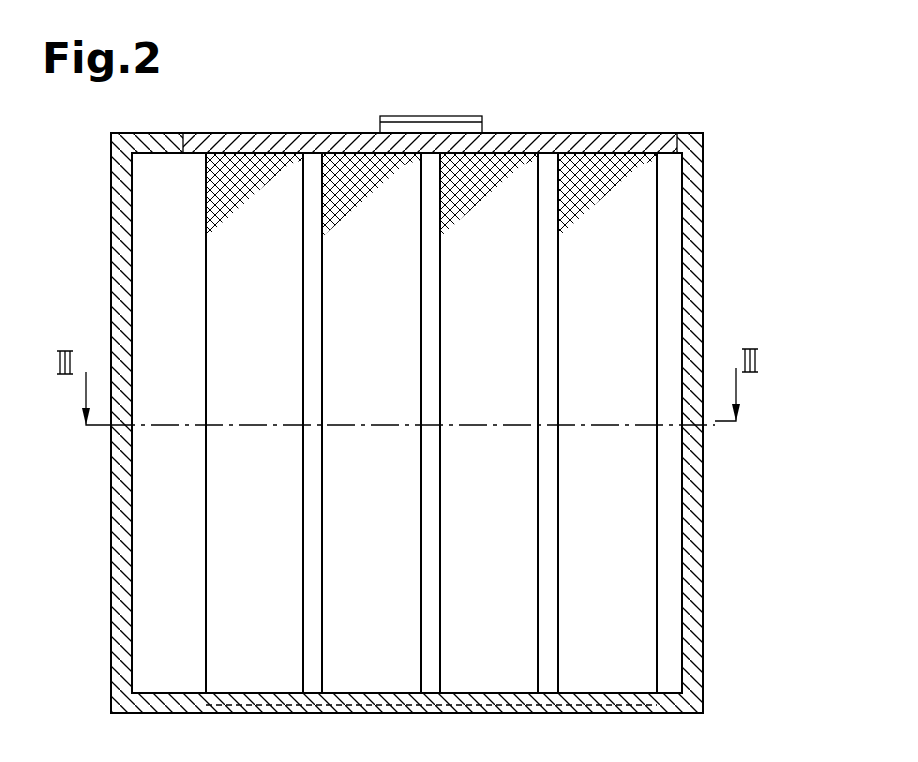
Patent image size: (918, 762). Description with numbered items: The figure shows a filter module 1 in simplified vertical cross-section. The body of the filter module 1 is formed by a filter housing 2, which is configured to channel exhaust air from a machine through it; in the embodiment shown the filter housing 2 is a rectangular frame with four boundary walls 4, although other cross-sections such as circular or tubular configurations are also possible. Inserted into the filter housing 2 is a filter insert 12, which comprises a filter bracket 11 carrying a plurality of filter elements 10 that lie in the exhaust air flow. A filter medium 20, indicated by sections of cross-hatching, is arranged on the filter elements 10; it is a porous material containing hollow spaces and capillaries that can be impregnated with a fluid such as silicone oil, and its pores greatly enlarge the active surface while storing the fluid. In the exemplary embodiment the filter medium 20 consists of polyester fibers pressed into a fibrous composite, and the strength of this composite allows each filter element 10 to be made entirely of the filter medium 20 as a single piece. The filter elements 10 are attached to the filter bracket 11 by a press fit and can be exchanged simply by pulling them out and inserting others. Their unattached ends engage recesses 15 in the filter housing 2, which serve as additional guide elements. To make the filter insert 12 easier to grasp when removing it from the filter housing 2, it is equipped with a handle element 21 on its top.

The filter module 1 is at (697, 93).
The filter housing 2 is at (406, 443).
The boundary walls 4 is at (118, 240).
The filter elements 10 is at (622, 568).
The filter bracket 11 is at (240, 138).
The filter insert 12 is at (560, 132).
The recesses 15 is at (610, 703).
The filter medium 20 is at (598, 160).
The handle element 21 is at (448, 125).